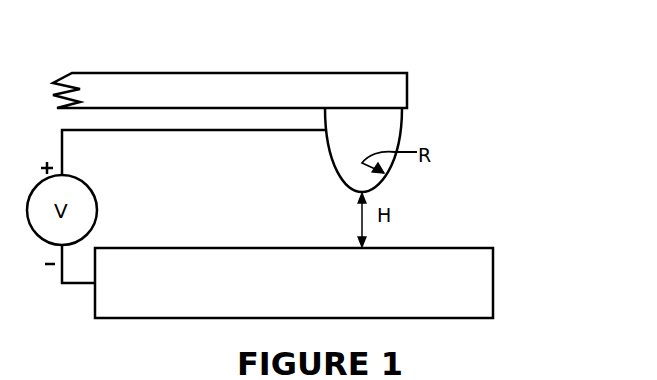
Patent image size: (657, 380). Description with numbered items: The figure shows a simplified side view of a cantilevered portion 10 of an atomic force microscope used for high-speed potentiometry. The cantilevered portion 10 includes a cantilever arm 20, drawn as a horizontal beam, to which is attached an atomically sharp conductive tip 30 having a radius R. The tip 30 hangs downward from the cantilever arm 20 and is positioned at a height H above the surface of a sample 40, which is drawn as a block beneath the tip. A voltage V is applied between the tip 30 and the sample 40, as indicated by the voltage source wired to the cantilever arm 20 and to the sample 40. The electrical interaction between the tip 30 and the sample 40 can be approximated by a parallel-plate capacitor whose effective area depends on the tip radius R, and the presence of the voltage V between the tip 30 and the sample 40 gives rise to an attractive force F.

The cantilevered portion 10 is at (497, 73).
The cantilever arm 20 is at (295, 73).
The conductive tip 30 is at (402, 126).
The sample 40 is at (447, 248).